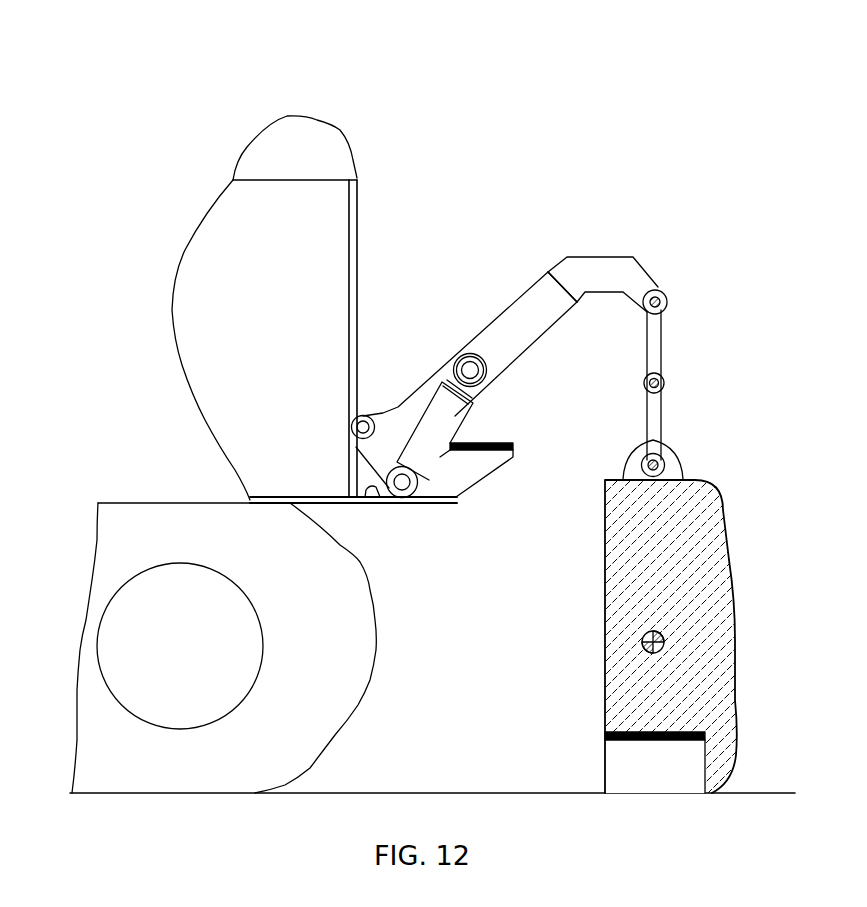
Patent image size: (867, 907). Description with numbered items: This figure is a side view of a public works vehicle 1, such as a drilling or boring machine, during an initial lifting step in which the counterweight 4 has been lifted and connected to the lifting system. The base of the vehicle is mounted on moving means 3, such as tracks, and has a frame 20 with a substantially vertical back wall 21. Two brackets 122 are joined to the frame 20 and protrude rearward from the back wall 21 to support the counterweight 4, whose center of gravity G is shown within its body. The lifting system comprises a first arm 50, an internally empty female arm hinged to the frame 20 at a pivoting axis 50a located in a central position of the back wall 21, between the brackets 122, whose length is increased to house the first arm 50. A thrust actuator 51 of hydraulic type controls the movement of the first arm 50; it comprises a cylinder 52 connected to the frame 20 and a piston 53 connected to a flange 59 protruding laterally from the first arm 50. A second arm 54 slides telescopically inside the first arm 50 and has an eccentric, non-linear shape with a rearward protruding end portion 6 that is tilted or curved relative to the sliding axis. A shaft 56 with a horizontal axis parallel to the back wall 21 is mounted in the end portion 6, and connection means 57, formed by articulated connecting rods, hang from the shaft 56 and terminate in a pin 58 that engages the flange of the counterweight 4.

The public works vehicle 1 is at (252, 253).
The frame 20 is at (222, 340).
The back wall 21 is at (360, 245).
The moving means 3 is at (135, 537).
The counterweight 4 is at (702, 557).
The center of gravity G is at (667, 648).
The first arm 50 is at (507, 330).
The pivoting axis 50a is at (352, 418).
The thrust actuator 51 is at (465, 427).
The cylinder 52 is at (427, 468).
The piston 53 is at (473, 398).
The second arm 54 is at (557, 268).
The shaft 56 is at (658, 285).
The connection means 57 is at (682, 376).
The pin 58 is at (683, 442).
The flange 59 is at (457, 358).
The end portion 6 is at (604, 268).
The bracket 122 is at (471, 474).